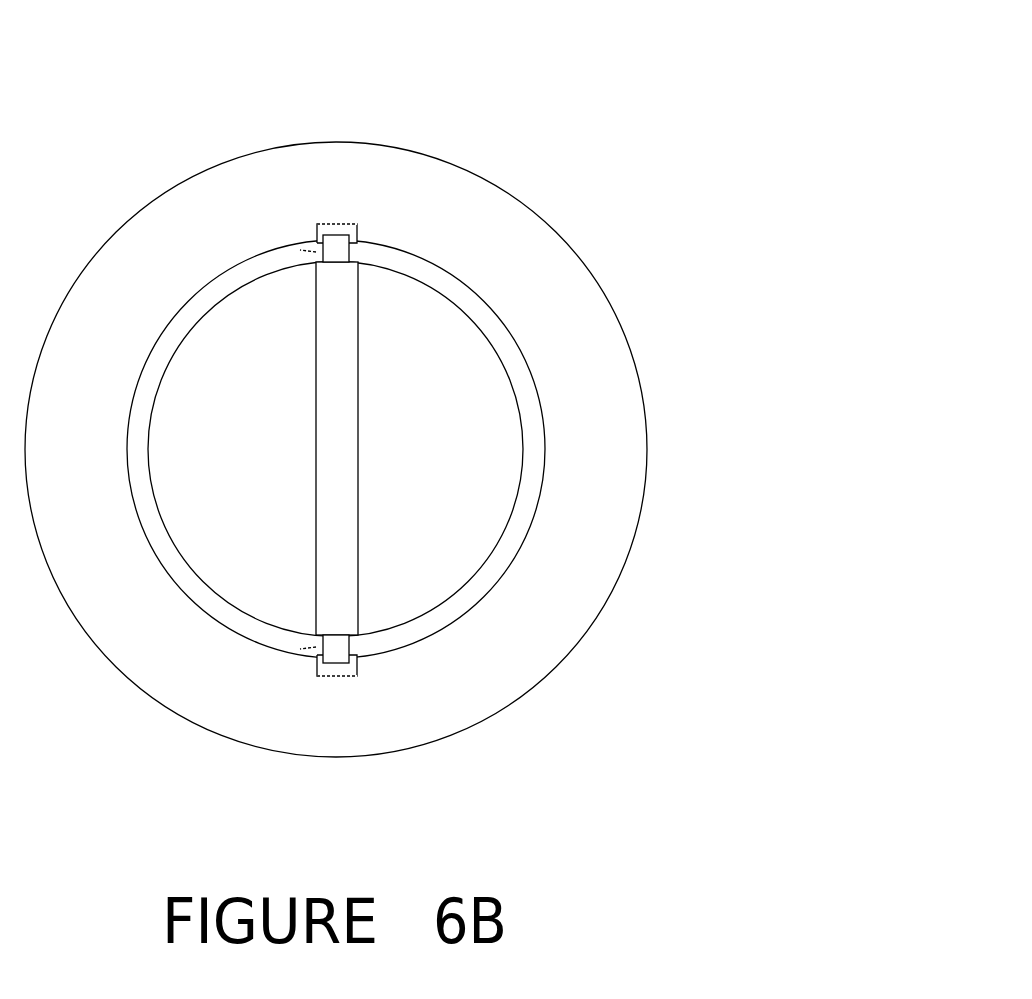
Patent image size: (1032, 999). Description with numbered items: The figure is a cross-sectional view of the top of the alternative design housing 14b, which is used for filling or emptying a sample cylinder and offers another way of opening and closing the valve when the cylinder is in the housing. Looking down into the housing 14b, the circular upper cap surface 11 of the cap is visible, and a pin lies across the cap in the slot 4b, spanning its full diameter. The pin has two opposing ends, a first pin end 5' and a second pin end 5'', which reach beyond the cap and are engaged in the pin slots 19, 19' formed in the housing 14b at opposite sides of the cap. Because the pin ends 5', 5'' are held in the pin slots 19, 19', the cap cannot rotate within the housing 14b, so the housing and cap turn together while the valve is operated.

The slot 4b is at (305, 349).
The pin end 5' is at (191, 147).
The pin end 5'' is at (187, 750).
The upper cap surface 11 is at (488, 325).
The housing 14b is at (663, 395).
The pin slot 19 is at (471, 131).
The pin slot 19' is at (472, 769).